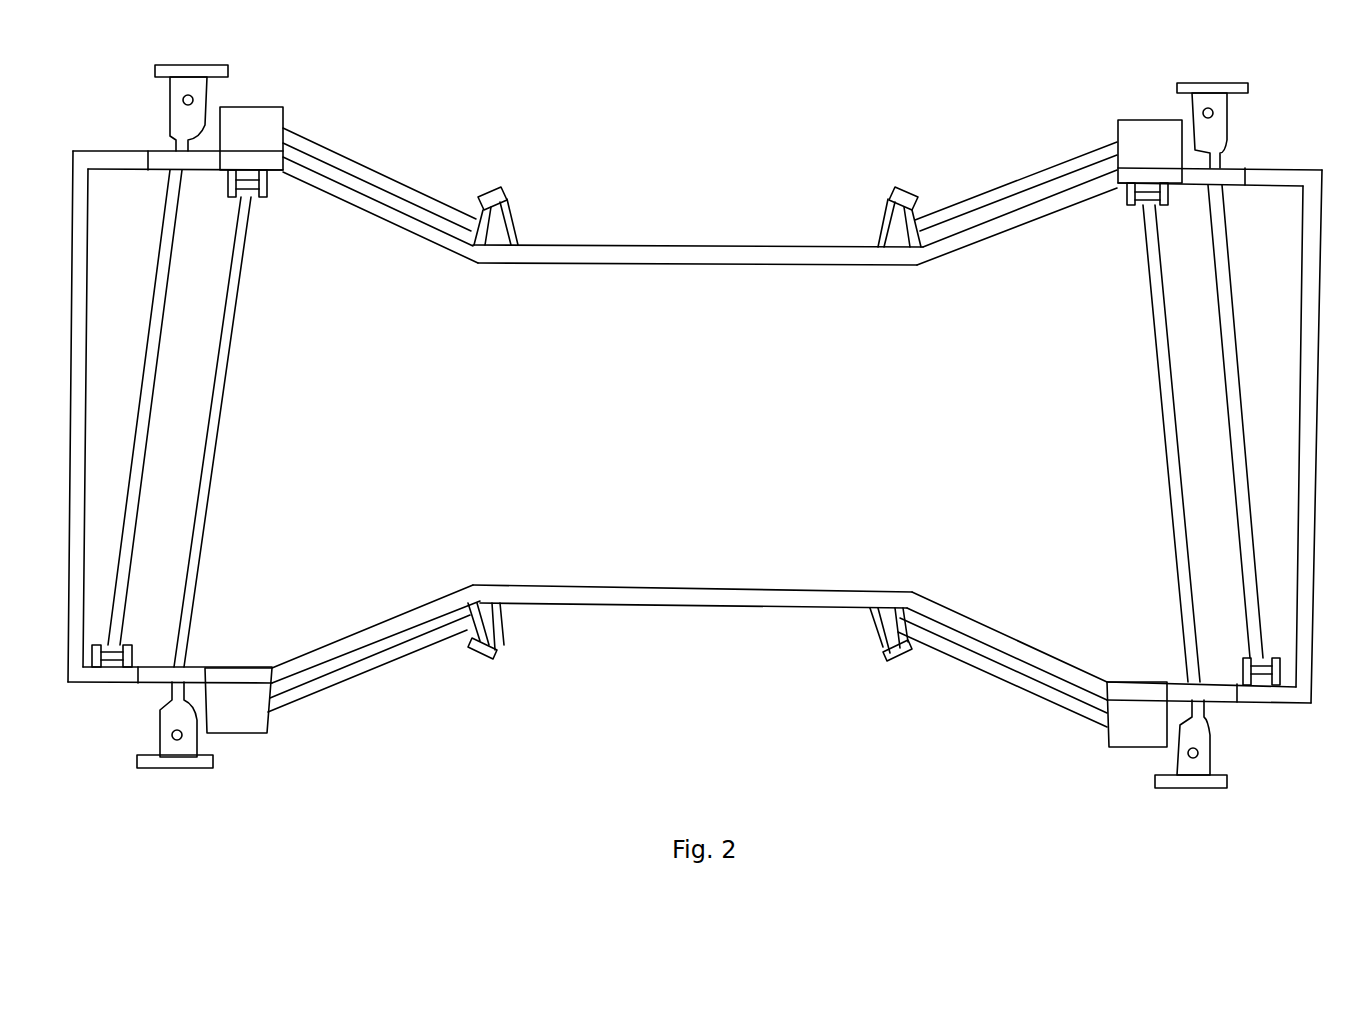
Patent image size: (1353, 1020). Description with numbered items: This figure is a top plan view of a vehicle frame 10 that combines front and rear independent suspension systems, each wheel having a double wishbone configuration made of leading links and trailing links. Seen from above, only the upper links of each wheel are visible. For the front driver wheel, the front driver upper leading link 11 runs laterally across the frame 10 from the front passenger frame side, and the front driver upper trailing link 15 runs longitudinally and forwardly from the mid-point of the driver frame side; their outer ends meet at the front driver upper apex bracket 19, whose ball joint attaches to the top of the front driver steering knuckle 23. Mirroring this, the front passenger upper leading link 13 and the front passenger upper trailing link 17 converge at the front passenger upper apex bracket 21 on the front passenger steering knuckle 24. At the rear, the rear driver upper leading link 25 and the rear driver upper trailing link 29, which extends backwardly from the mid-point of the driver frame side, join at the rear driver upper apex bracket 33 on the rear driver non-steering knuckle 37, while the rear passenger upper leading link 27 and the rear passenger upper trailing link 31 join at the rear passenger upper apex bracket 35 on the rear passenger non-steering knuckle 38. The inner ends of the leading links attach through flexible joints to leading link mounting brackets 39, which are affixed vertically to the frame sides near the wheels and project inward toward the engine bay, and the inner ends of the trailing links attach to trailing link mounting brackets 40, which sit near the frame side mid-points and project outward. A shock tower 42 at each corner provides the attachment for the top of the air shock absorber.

The frame 10 is at (740, 598).
The front driver upper leading link 11 is at (1240, 258).
The front passenger upper leading link 13 is at (1168, 458).
The front driver upper trailing link 15 is at (1043, 178).
The front passenger upper trailing link 17 is at (1030, 685).
The front driver upper apex bracket 19 is at (1230, 133).
The front passenger upper apex bracket 21 is at (1210, 735).
The front driver steering knuckle 23 is at (1177, 92).
The front passenger steering knuckle 24 is at (1158, 772).
The rear driver upper leading link 25 is at (165, 240).
The rear passenger upper leading link 27 is at (225, 405).
The rear driver upper trailing link 29 is at (355, 163).
The rear passenger upper trailing link 31 is at (355, 678).
The rear driver upper apex bracket 33 is at (172, 102).
The rear passenger upper apex bracket 35 is at (160, 715).
The rear driver non-steering knuckle 37 is at (228, 80).
The rear passenger non-steering knuckle 38 is at (213, 760).
The leading link mounting brackets 39 is at (265, 193).
The trailing link mounting brackets 40 is at (520, 212).
The shock tower 42 is at (265, 115).